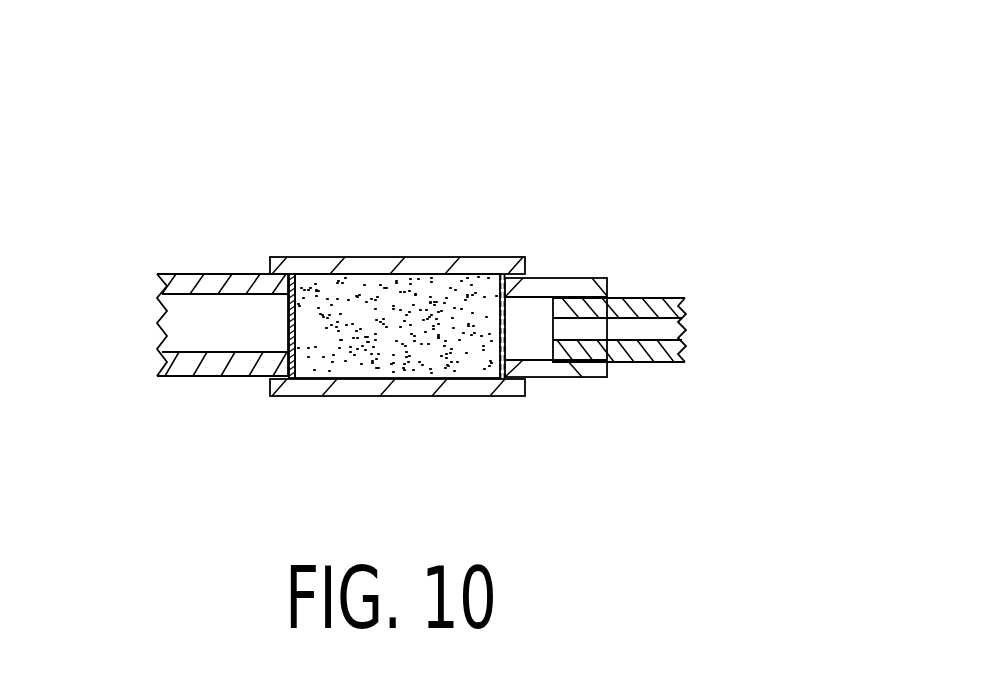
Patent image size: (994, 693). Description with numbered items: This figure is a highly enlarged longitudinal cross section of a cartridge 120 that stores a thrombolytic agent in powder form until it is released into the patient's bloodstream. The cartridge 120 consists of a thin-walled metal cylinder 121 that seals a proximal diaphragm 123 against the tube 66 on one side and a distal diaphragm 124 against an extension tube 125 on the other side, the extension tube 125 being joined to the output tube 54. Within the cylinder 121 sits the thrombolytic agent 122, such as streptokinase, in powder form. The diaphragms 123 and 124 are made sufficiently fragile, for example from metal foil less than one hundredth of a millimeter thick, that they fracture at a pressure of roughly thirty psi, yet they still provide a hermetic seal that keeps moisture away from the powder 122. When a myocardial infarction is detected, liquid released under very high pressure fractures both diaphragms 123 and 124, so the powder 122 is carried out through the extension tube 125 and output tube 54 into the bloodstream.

The cartridge 120 is at (435, 274).
The tube 66 is at (228, 274).
The thin-walled metal cylinder 121 is at (337, 257).
The thrombolytic agent 122 is at (412, 363).
The proximal diaphragm 123 is at (289, 317).
The distal diaphragm 124 is at (506, 322).
The extension tube 125 is at (570, 378).
The output tube 54 is at (647, 298).